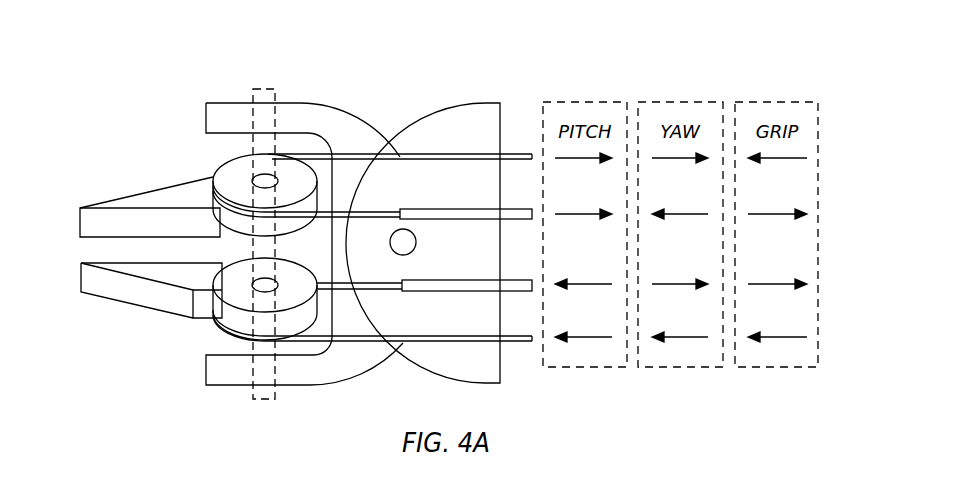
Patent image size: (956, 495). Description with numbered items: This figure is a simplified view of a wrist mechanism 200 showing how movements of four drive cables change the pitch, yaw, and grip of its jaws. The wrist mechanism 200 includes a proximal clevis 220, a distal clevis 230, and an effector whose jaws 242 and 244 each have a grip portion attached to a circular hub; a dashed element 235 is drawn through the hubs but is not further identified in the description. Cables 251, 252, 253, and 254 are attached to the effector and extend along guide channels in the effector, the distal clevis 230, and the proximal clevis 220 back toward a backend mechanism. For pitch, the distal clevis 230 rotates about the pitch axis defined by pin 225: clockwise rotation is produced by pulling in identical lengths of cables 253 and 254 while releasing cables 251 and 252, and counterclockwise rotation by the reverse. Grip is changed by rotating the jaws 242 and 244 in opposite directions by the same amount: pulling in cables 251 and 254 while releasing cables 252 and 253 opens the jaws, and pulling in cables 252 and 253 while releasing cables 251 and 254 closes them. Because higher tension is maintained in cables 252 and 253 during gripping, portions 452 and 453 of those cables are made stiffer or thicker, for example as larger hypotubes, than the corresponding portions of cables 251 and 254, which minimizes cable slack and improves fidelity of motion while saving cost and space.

The wrist mechanism 200 is at (158, 52).
The proximal clevis 220 is at (490, 137).
The pin 225 is at (418, 243).
The distal clevis 230 is at (372, 148).
The jaw pivot axis 235 is at (267, 88).
The jaw 242 is at (137, 298).
The jaw 244 is at (158, 192).
The cable 251 is at (475, 343).
The cable 252 is at (390, 292).
The cable 253 is at (387, 208).
The cable 254 is at (422, 152).
The portion of cable 452 is at (488, 278).
The portion of cable 453 is at (487, 208).